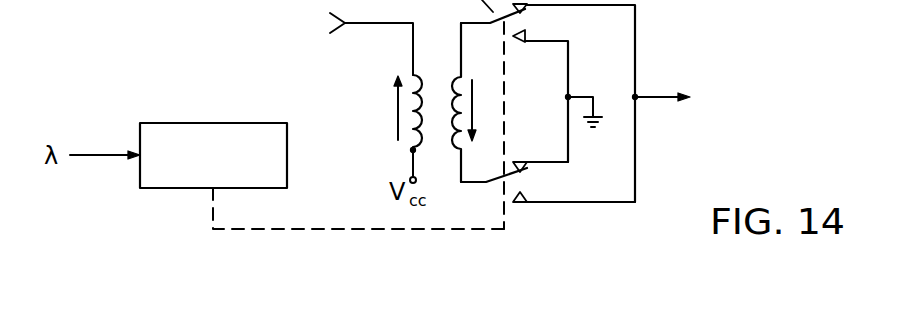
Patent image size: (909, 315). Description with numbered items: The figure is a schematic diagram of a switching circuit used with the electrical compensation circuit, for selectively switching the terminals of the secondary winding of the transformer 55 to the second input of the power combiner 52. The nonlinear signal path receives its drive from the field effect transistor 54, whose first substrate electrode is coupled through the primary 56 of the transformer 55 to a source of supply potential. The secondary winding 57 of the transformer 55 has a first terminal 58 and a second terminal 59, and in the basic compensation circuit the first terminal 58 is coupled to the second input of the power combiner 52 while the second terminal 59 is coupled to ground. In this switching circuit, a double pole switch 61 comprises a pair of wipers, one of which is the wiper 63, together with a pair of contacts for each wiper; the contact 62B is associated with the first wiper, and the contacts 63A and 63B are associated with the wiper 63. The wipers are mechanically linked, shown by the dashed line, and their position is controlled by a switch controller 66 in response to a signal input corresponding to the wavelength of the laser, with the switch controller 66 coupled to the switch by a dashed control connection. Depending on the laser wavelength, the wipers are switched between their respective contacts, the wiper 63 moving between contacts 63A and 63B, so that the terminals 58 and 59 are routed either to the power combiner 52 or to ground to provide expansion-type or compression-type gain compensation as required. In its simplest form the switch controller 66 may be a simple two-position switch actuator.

The power combiner 52 is at (769, 95).
The field effect transistor 54 is at (287, 27).
The transformer 55 is at (358, 182).
The primary winding 56 is at (385, 108).
The secondary winding 57 is at (477, 110).
The first terminal of the secondary winding 58 is at (486, 21).
The second terminal of the secondary winding 59 is at (488, 182).
The double pole switch 61 is at (530, 237).
The contact 62B is at (528, 34).
The wiper 63 is at (496, 176).
The contact 63A is at (530, 170).
The contact 63B is at (527, 201).
The switch controller 66 is at (245, 123).